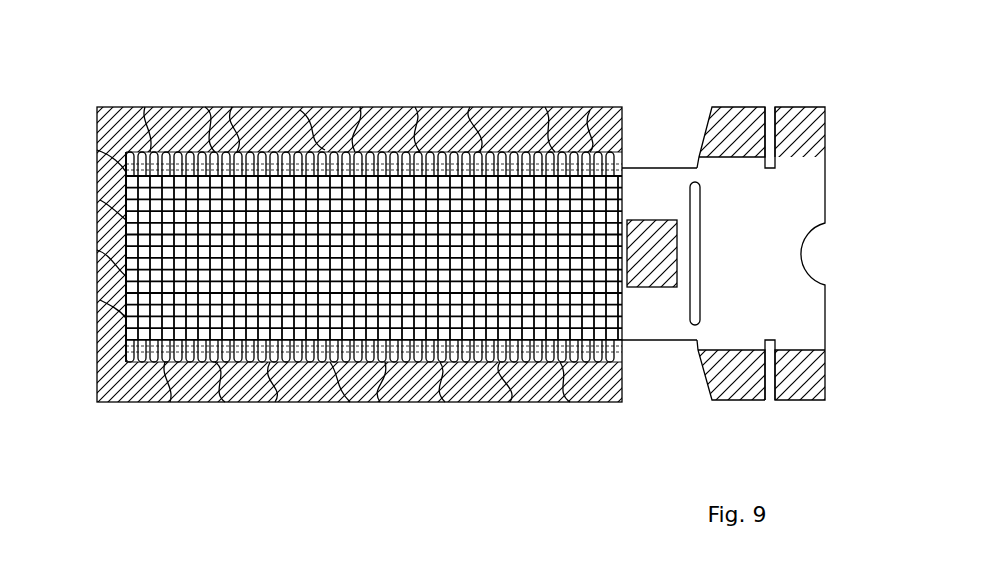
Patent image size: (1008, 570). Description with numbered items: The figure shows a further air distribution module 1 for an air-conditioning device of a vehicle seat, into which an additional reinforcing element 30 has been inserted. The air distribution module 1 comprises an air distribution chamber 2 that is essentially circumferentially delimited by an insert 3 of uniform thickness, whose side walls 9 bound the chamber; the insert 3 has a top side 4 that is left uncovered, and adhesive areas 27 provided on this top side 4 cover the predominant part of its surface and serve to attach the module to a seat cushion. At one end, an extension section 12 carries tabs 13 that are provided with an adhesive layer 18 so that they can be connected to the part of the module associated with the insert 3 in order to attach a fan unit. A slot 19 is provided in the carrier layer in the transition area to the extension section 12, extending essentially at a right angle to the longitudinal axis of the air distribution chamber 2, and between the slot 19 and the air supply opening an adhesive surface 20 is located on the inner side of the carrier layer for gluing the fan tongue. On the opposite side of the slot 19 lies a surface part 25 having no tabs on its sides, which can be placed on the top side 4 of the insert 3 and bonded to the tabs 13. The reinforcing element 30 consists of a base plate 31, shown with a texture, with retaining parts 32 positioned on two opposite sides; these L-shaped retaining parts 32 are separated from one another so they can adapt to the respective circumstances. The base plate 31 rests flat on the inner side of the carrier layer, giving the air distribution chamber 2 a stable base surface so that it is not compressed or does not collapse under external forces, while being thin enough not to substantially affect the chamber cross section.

The air distribution module 1 is at (90, 106).
The air distribution chamber 2 is at (352, 160).
The insert 3 is at (455, 135).
The top side 4 is at (193, 138).
The side walls 9 is at (124, 300).
The extension section 12 is at (720, 76).
The tabs 13 is at (700, 128).
The adhesive layer 18 is at (800, 107).
The slot 19 is at (694, 326).
The adhesive surface 20 is at (655, 240).
The surface part 25 is at (752, 282).
The adhesive areas 27 is at (262, 135).
The reinforcing element 30 is at (122, 346).
The base plate 31 is at (150, 226).
The retaining parts 32 is at (545, 158).